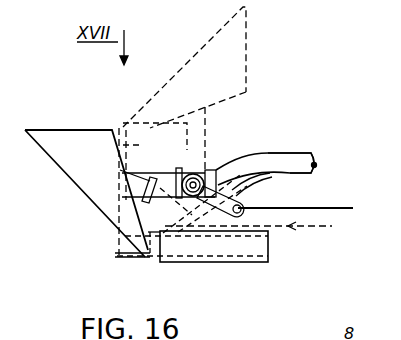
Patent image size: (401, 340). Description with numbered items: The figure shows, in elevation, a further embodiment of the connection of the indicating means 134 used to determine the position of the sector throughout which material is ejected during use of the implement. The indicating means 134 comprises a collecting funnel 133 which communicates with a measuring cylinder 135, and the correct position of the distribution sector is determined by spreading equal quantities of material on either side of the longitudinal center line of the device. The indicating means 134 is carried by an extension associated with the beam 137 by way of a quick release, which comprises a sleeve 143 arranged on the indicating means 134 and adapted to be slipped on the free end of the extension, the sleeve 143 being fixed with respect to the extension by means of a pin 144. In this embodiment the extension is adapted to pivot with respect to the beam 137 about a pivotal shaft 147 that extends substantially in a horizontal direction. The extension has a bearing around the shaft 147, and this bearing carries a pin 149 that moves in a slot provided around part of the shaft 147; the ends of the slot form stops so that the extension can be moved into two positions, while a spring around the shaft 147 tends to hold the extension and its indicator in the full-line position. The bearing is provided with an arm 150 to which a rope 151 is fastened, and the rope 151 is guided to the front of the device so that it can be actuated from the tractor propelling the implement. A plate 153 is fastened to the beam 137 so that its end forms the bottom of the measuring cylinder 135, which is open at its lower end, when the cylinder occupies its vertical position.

The collecting funnel 133 is at (56, 124).
The indicating means 134 is at (82, 184).
The measuring cylinder 135 is at (215, 262).
The beam 137 is at (295, 153).
The sleeve 143 is at (212, 113).
The pin 144 is at (130, 184).
The pivotal shaft 147 is at (206, 170).
The pin 149 is at (186, 174).
The arm 150 is at (246, 197).
The rope 151 is at (286, 230).
The plate 153 is at (118, 256).